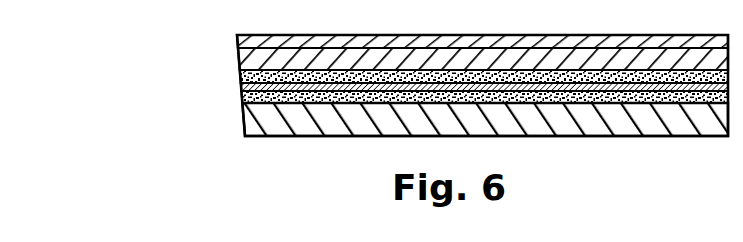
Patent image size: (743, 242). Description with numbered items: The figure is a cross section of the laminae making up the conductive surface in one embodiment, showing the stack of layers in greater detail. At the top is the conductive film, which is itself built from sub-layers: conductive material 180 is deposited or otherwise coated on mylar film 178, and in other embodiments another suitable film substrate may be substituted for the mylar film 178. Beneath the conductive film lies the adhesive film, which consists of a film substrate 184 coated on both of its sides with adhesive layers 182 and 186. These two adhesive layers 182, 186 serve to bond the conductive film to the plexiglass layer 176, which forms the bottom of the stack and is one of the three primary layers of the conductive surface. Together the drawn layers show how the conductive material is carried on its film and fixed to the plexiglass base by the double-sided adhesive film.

The plexiglass layer 176 is at (242, 115).
The mylar film 178 is at (237, 39).
The conductive material 180 is at (237, 58).
The adhesive layer 182 is at (237, 76).
The film substrate 184 is at (237, 87).
The adhesive layer 186 is at (237, 97).